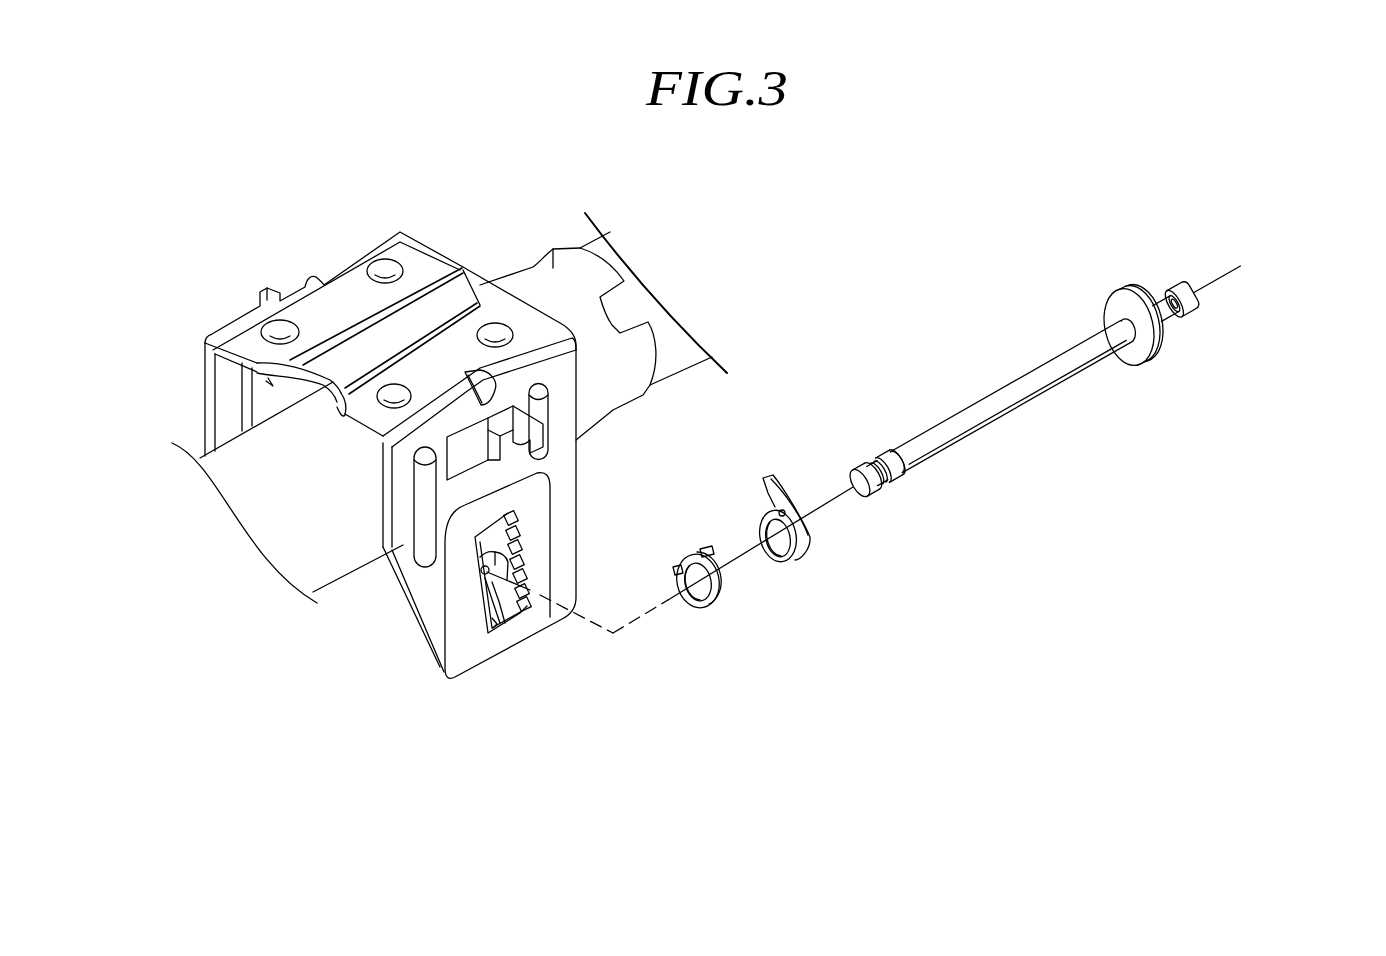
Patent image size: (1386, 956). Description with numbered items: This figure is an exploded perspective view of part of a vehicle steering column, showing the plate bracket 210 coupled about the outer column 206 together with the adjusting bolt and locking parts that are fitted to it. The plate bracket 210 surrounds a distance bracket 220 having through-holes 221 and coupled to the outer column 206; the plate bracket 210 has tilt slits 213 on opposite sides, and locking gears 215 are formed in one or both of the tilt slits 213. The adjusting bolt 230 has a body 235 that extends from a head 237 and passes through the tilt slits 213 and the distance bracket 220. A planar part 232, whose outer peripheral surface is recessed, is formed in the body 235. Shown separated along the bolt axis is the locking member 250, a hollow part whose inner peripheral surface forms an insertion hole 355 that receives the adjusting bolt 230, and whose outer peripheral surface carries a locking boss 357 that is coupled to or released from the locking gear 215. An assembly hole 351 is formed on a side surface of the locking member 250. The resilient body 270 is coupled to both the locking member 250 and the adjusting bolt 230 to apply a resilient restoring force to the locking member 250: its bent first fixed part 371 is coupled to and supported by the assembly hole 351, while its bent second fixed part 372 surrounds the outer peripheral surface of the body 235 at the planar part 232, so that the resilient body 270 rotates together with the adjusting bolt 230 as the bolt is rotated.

The outer column 206 is at (553, 268).
The plate bracket 210 is at (563, 457).
The tilt slit 213 is at (487, 575).
The locking gear 215 is at (532, 578).
The distance bracket 220 is at (495, 530).
The through-hole 221 is at (505, 628).
The adjusting bolt 230 is at (1175, 348).
The planar part 232 is at (988, 427).
The body 235 is at (1000, 412).
The head 237 is at (1133, 353).
The locking member 250 is at (814, 524).
The resilient body 270 is at (716, 571).
The assembly hole 351 is at (786, 512).
The insertion hole 355 is at (793, 562).
The locking boss 357 is at (773, 480).
The first fixed part 371 is at (708, 548).
The second fixed part 372 is at (675, 567).